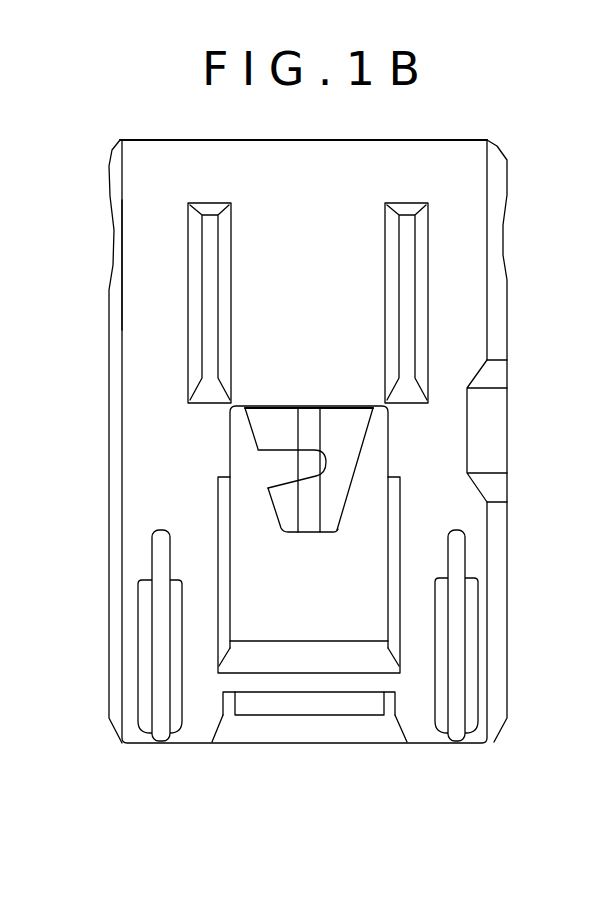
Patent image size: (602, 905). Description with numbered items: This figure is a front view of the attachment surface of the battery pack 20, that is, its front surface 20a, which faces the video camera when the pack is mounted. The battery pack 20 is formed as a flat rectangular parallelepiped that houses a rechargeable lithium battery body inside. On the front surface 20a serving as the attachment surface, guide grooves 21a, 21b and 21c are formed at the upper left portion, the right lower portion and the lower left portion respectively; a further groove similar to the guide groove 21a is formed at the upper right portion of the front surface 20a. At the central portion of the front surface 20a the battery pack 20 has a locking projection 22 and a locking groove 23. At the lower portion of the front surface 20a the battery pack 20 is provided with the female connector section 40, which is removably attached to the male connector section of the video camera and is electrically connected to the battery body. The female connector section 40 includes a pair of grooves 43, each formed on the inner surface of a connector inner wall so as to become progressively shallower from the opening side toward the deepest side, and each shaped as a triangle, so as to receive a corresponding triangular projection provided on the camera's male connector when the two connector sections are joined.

The battery pack 20 is at (58, 201).
The front surface 20a is at (126, 284).
The guide groove 21a is at (207, 330).
The guide groove 21b is at (458, 723).
The guide groove 21c is at (160, 614).
The locking projection 22 is at (277, 425).
The locking groove 23 is at (283, 460).
The female connector section 40 is at (300, 723).
The groove 43 is at (220, 733).